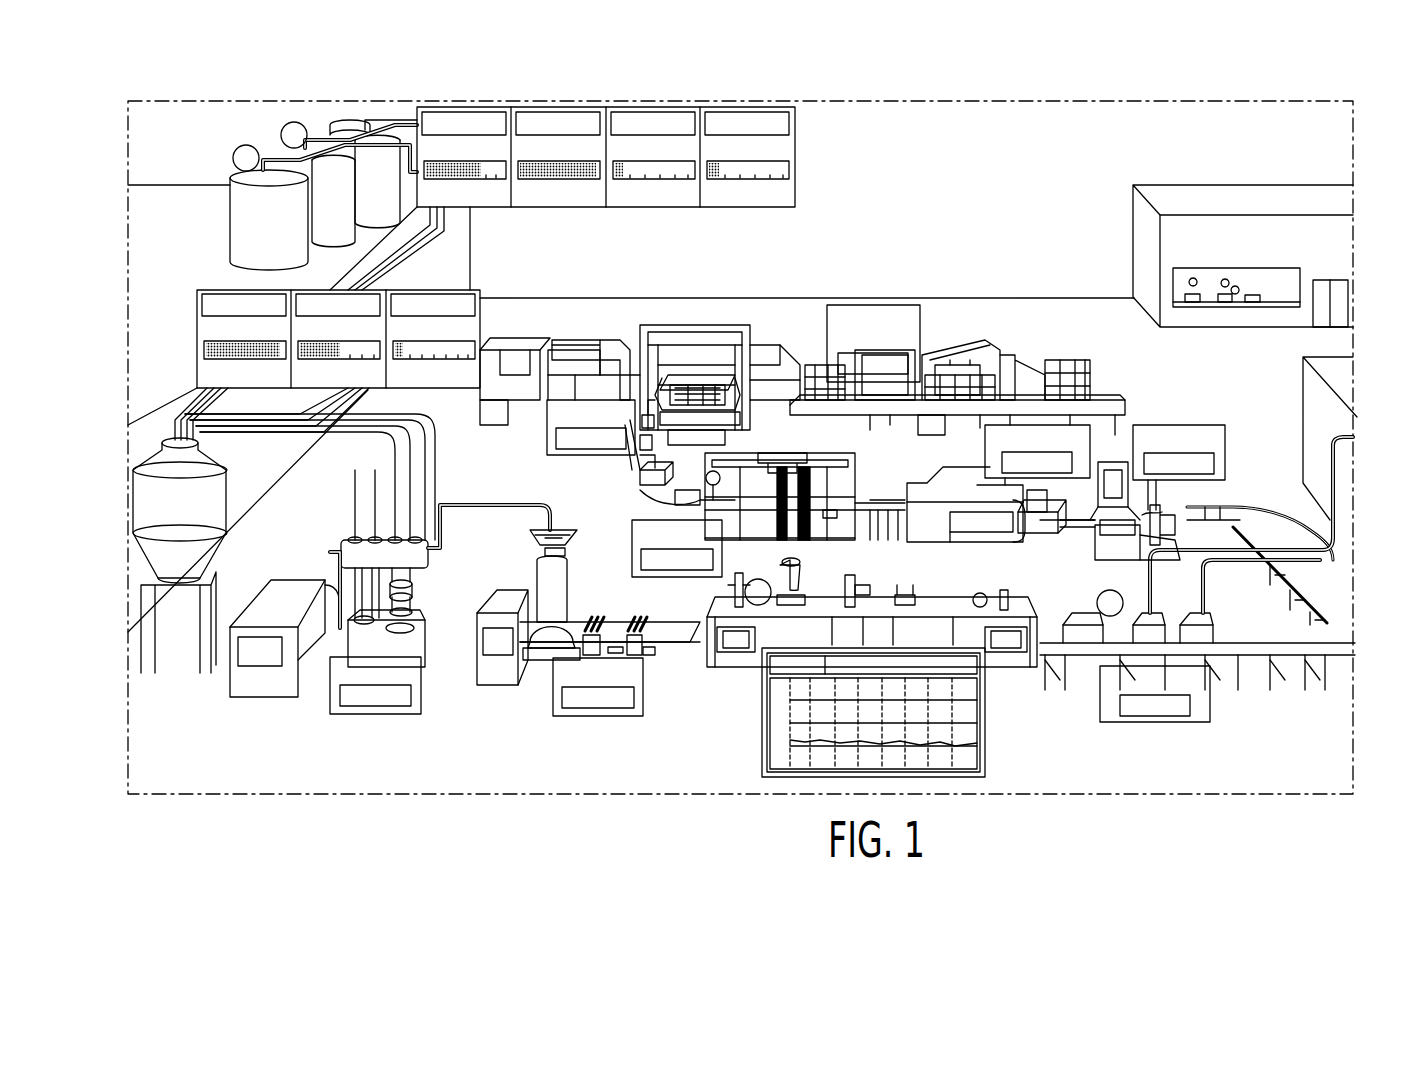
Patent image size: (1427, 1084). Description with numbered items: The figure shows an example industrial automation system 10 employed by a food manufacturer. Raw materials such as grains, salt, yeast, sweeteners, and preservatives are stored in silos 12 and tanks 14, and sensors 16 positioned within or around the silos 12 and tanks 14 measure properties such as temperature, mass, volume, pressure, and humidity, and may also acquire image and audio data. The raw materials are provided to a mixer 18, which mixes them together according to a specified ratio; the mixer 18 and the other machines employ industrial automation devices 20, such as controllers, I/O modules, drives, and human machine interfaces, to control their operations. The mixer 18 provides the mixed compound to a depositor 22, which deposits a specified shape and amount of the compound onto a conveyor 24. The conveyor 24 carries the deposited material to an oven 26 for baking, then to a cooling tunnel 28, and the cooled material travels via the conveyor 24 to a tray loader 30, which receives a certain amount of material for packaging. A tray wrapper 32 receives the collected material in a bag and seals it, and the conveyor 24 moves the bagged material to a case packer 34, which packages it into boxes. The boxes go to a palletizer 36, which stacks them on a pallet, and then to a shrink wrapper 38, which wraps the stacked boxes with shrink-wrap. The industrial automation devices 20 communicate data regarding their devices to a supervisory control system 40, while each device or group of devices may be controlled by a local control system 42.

The industrial automation system 10 is at (876, 72).
The silos 12 is at (345, 132).
The tanks 14 is at (190, 352).
The sensors 16 is at (246, 145).
The mixer 18 is at (428, 672).
The industrial automation devices 20 is at (262, 697).
The depositor 22 is at (651, 663).
The conveyor 24 is at (665, 622).
The oven 26 is at (950, 588).
The cooling tunnel 28 is at (1200, 640).
The tray loader 30 is at (1228, 465).
The tray wrapper 32 is at (980, 440).
The case packer 34 is at (622, 545).
The palletizer 36 is at (528, 443).
The shrink wrapper 38 is at (935, 320).
The supervisory control system 40 is at (1245, 290).
The local control system 42 is at (258, 686).